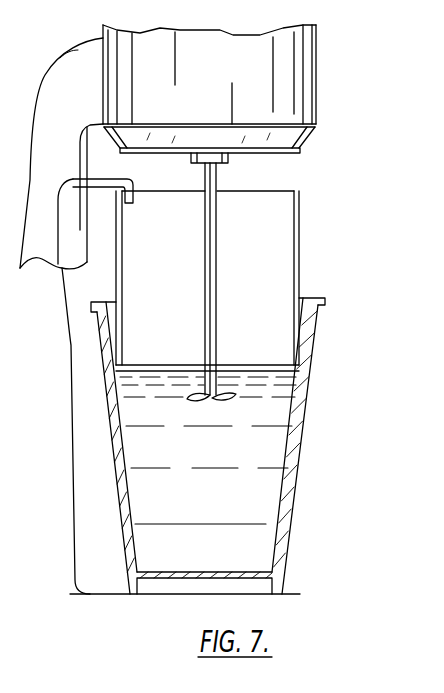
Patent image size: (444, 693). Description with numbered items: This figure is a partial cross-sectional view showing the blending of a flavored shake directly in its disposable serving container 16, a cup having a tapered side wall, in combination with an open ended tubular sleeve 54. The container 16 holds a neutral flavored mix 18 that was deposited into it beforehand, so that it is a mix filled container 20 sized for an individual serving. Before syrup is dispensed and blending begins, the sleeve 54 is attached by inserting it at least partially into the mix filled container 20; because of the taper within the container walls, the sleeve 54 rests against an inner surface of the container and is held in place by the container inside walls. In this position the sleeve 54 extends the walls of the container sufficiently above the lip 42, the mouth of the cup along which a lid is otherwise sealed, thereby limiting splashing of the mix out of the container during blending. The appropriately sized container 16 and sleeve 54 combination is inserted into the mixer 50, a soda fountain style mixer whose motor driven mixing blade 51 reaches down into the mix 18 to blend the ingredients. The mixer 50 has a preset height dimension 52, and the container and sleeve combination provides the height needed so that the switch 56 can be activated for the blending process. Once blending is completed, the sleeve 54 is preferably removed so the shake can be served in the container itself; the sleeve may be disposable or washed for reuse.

The disposable serving container 16 is at (303, 448).
The neutral flavored mix 18 is at (213, 460).
The mix filled container 20 is at (236, 446).
The lip 42 is at (325, 298).
The mixer 50 is at (226, 83).
The motor driven mixing blade 51 is at (210, 272).
The preset height dimension 52 is at (70, 342).
The open ended tubular sleeve 54 is at (298, 255).
The switch 56 is at (107, 190).